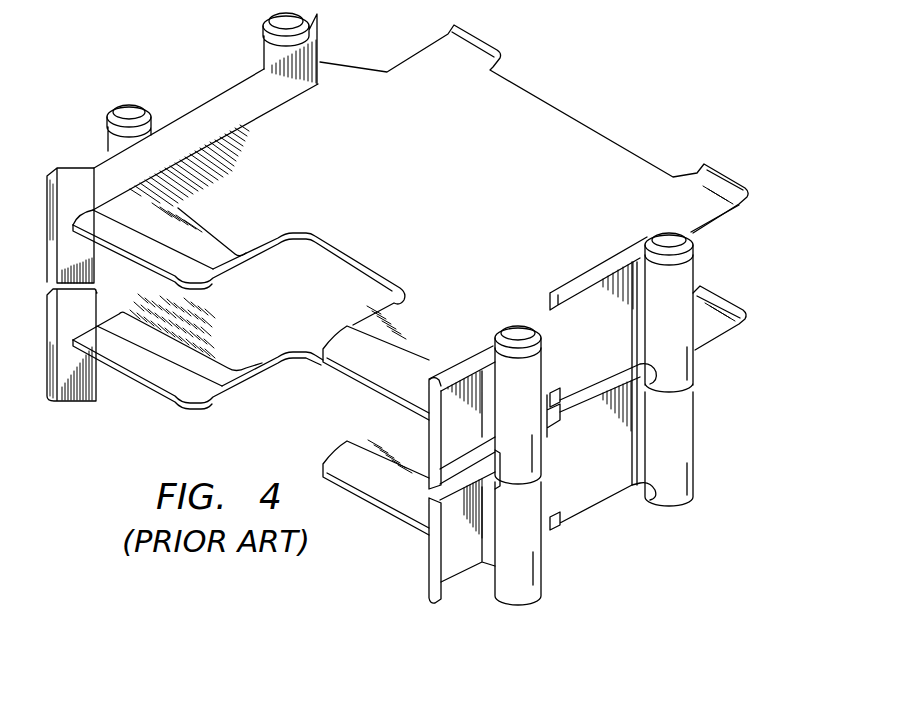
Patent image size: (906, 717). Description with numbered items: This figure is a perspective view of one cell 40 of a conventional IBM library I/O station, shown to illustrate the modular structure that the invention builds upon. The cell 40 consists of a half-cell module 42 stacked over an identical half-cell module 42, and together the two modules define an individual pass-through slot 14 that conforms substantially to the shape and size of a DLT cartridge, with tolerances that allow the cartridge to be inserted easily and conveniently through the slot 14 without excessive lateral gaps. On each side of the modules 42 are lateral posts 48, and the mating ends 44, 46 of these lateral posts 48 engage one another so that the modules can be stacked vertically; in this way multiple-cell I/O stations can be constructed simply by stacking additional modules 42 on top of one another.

The cell 40 is at (689, 64).
The slot 14 is at (302, 309).
The half-cell module 42 is at (571, 120).
The mating end 44 is at (668, 240).
The mating end 46 is at (680, 506).
The lateral post 48 is at (688, 270).